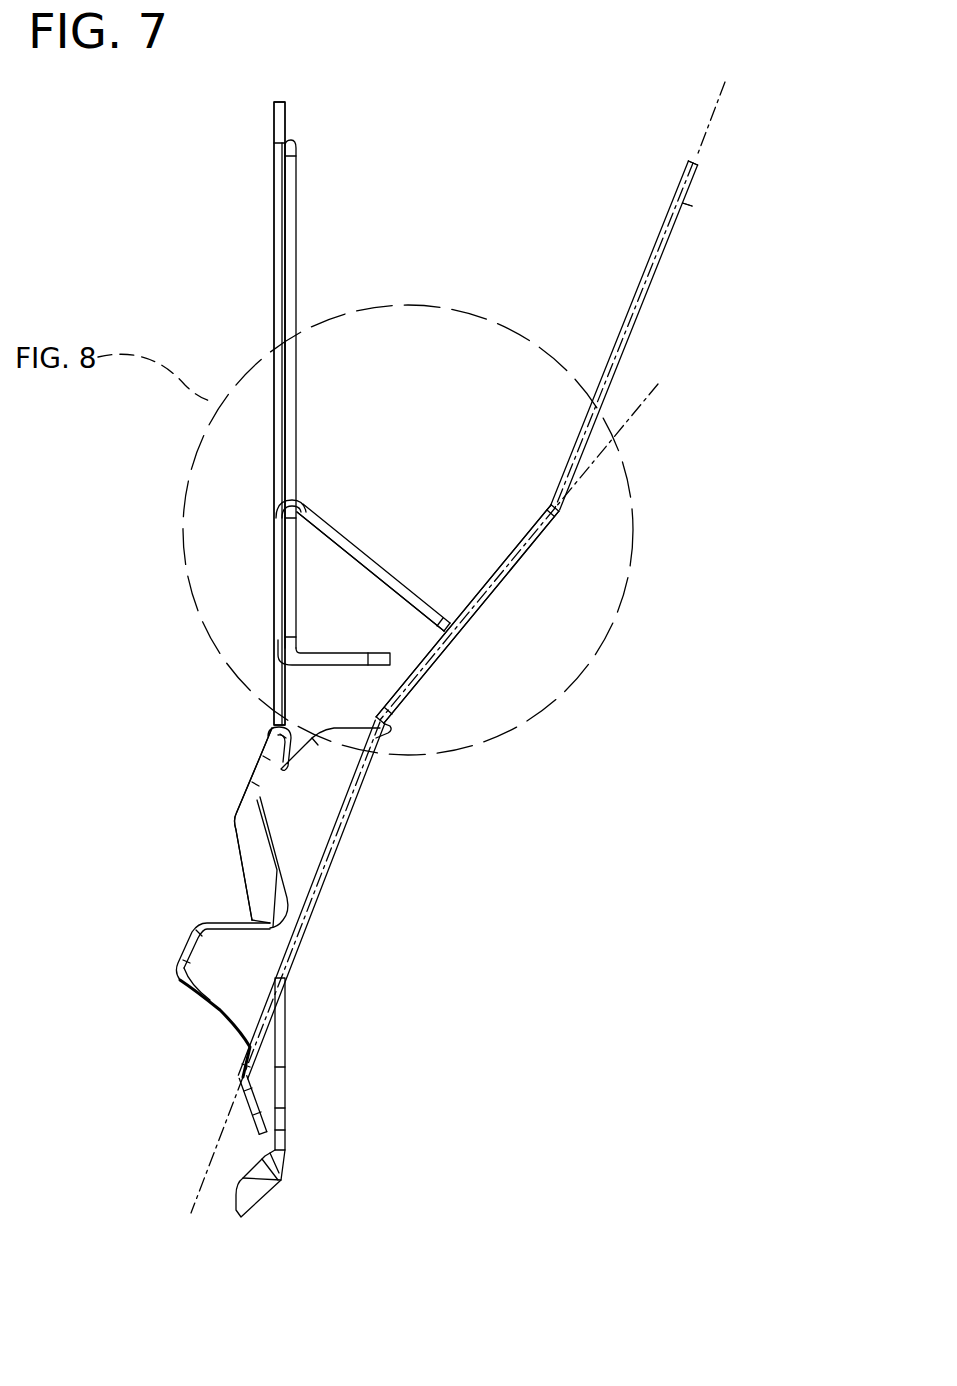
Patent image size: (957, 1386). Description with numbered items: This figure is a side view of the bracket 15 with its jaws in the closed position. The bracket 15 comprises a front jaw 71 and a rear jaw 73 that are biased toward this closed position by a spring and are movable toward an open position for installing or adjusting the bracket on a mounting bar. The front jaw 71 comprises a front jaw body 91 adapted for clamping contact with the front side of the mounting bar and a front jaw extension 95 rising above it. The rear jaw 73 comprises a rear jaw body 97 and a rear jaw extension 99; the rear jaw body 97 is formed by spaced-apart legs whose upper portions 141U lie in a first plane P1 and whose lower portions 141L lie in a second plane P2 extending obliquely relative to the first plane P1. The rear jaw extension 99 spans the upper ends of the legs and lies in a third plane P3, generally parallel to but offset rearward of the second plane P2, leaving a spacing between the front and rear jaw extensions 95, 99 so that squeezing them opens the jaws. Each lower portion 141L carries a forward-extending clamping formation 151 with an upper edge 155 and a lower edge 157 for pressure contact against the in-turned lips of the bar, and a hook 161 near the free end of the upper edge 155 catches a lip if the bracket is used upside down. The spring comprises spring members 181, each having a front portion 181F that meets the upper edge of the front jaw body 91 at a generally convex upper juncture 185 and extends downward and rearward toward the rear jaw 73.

The bracket 15 is at (300, 96).
The front jaw 71 is at (268, 168).
The front jaw extension 95 is at (272, 255).
The third plane P3 is at (725, 100).
The rear jaw extension 99 is at (700, 186).
The rear jaw 73 is at (682, 240).
The upper juncture 185 is at (303, 500).
The spring member 181 is at (362, 543).
The front portion of spring member 181F is at (390, 567).
The first plane P1 is at (625, 432).
The rear jaw body 97 is at (520, 567).
The upper edge 155 is at (272, 724).
The hook 161 is at (265, 766).
The upper portion of leg 141U is at (438, 663).
The clamping formation 151 is at (208, 962).
The lower portion of leg 141L is at (300, 925).
The lower edge 157 is at (203, 1010).
The front jaw body 91 is at (286, 1055).
The second plane P2 is at (190, 1187).